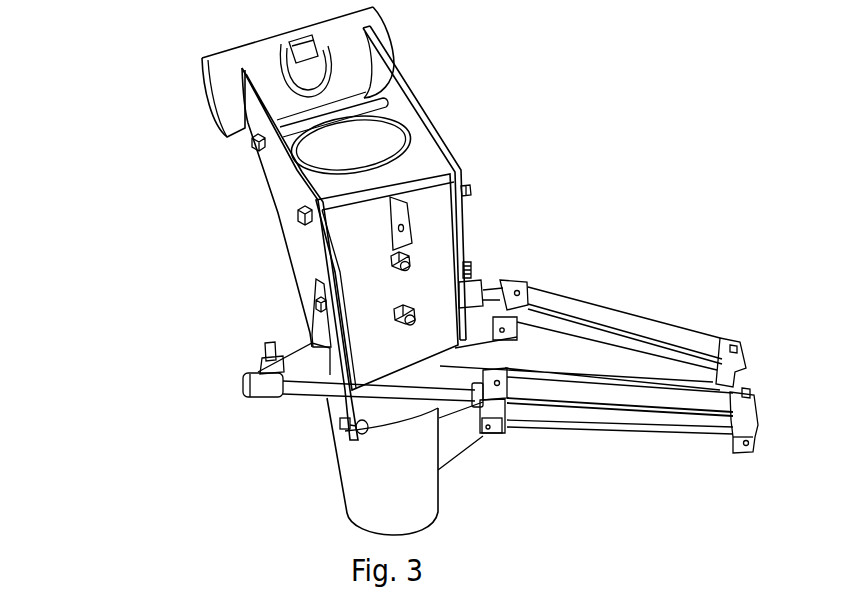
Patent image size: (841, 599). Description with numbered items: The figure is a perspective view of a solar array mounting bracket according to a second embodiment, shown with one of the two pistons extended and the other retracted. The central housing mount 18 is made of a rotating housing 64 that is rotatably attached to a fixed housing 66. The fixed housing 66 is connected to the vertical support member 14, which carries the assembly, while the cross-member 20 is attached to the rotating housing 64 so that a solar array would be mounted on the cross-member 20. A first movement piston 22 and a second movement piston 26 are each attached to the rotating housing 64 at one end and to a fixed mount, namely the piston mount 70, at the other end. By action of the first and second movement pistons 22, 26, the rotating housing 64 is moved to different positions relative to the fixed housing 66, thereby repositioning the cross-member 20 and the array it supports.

The vertical support member 14 is at (420, 480).
The central housing mount 18 is at (112, 227).
The cross-member 20 is at (252, 54).
The first movement piston 22 is at (627, 420).
The second movement piston 26 is at (603, 317).
The rotating housing 64 is at (282, 186).
The fixed housing 66 is at (343, 423).
The piston mount 70 is at (577, 373).